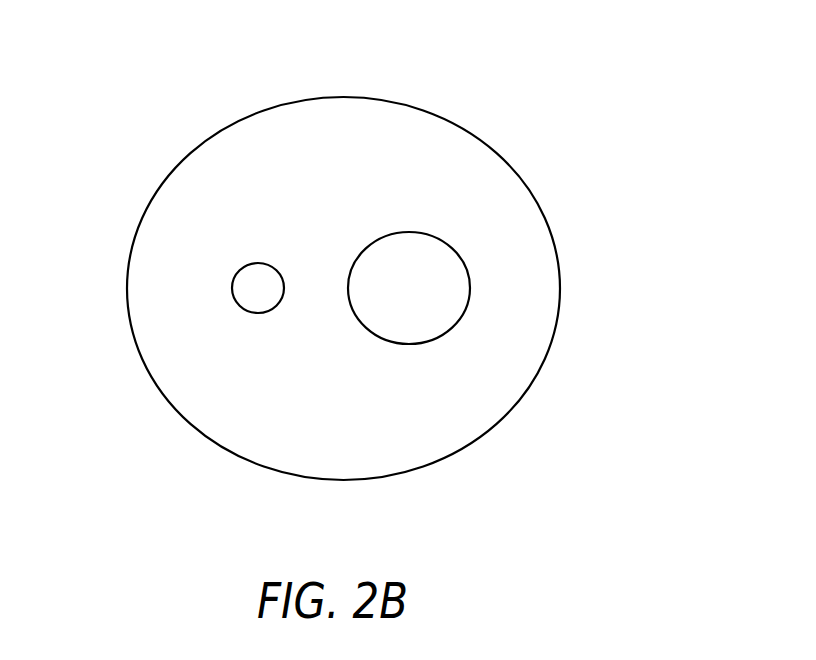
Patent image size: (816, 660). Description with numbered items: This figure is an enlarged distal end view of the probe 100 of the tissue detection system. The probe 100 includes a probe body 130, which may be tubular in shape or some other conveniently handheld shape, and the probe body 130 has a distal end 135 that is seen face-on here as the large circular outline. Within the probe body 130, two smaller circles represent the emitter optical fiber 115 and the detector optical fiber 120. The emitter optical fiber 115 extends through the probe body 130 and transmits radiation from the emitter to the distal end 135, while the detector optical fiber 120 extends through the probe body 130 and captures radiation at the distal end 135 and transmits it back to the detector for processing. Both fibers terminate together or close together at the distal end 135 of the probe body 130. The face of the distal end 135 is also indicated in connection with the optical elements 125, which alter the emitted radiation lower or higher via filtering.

The probe 100 is at (424, 98).
The emitter optical fiber 115 is at (233, 281).
The detector optical fiber 120 is at (458, 252).
The optical elements 125 is at (222, 370).
The probe body 130 is at (276, 146).
The distal end 135 is at (554, 329).